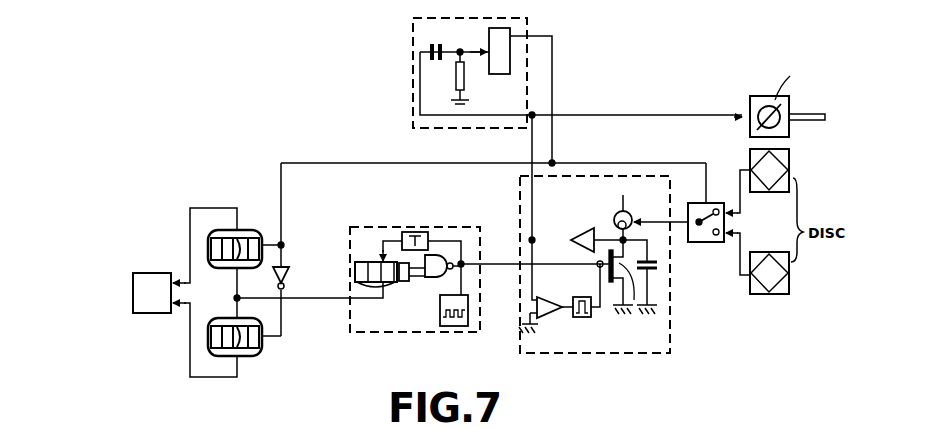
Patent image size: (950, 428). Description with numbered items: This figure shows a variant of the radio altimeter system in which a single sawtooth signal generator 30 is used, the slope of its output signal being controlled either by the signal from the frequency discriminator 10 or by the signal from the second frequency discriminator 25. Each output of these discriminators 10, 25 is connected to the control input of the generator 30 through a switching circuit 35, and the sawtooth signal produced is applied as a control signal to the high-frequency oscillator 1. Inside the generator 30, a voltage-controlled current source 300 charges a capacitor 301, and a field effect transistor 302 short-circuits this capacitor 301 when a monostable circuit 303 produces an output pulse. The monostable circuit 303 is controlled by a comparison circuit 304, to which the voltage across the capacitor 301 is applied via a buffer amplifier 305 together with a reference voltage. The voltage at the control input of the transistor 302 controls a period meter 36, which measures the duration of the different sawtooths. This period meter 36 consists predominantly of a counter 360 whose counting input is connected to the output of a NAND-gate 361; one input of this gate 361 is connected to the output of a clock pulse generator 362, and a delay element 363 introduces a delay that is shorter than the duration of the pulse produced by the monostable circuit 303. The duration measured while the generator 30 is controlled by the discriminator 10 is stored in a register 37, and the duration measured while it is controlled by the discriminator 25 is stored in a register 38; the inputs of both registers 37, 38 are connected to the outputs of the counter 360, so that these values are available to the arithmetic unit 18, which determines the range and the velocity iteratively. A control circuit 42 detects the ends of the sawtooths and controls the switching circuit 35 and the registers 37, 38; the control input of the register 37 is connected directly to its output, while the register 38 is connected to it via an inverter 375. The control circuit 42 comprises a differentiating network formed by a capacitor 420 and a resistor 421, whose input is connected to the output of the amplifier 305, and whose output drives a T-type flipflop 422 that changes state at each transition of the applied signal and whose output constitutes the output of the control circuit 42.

The high-frequency oscillator 1 is at (760, 98).
The frequency discriminator 10 is at (758, 185).
The second frequency discriminator 25 is at (758, 288).
The arithmetic unit 18 is at (106, 306).
The sawtooth signal generator 30 is at (621, 353).
The voltage-controlled current source 300 is at (614, 211).
The capacitor 301 is at (664, 270).
The field effect transistor 302 is at (629, 289).
The monostable circuit 303 is at (582, 301).
The comparison circuit 304 is at (542, 302).
The buffer amplifier 305 is at (573, 232).
The switching circuit 35 is at (703, 243).
The period meter 36 is at (384, 332).
The counter 360 is at (356, 268).
The NAND-gate 361 is at (432, 282).
The clock pulse generator 362 is at (462, 326).
The delay element 363 is at (418, 232).
The register 37 is at (258, 236).
The register 38 is at (262, 341).
The inverter 375 is at (287, 278).
The control circuit 42 is at (413, 80).
The capacitor 420 is at (438, 45).
The resistor 421 is at (456, 78).
The flipflop 422 is at (500, 74).